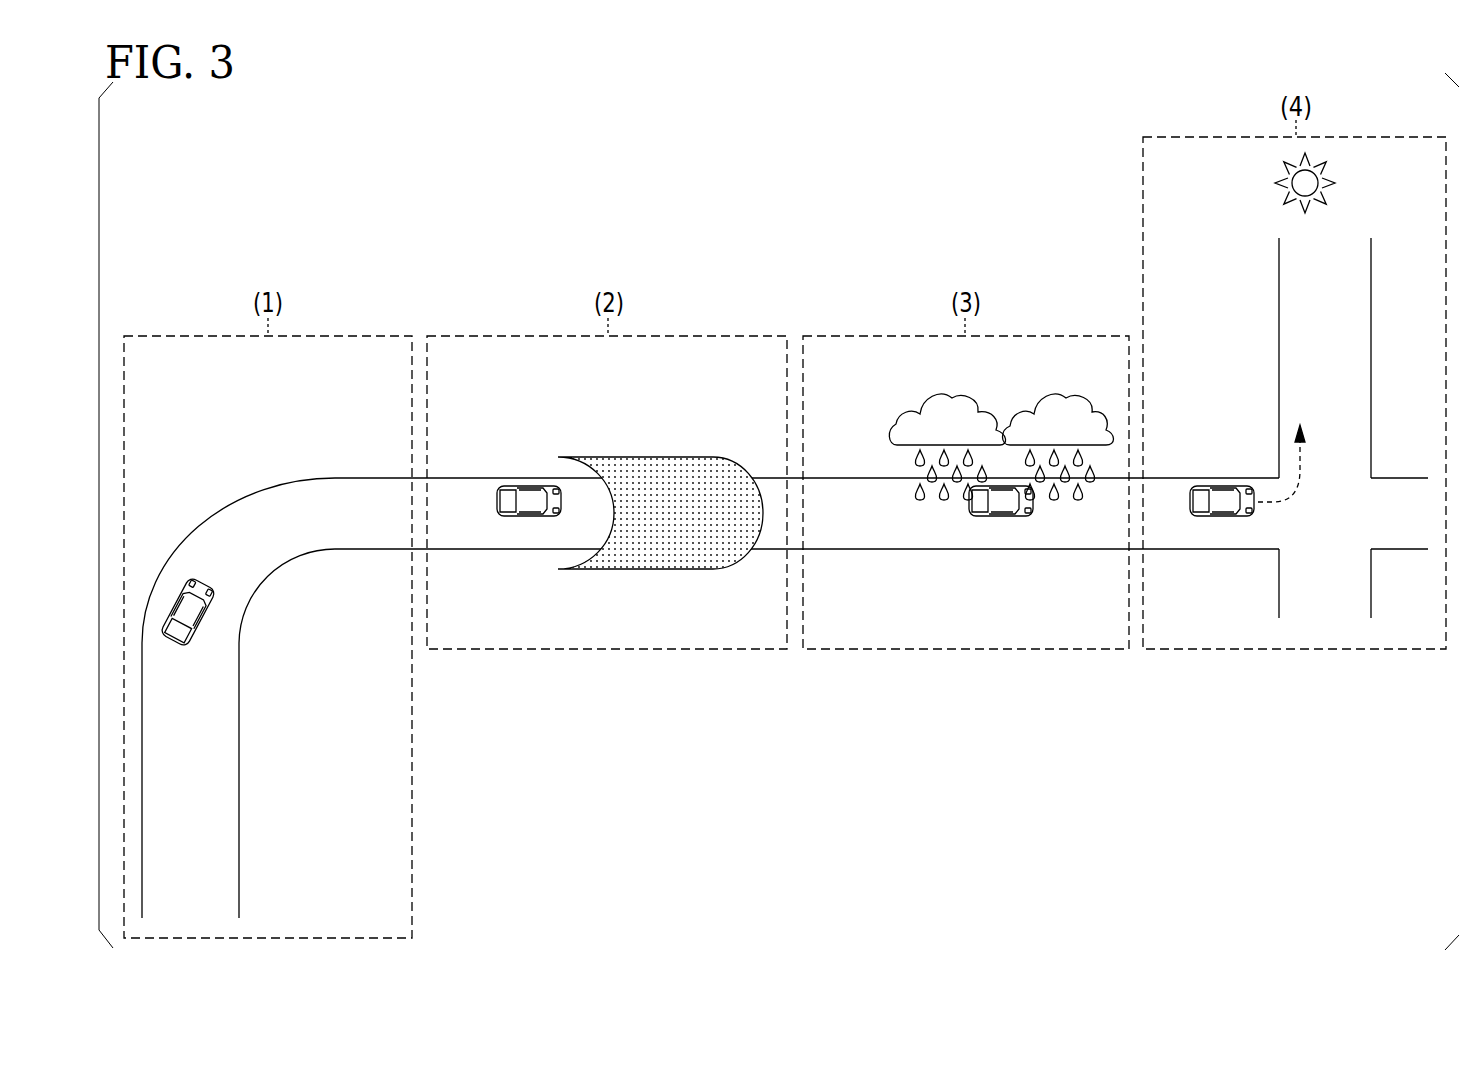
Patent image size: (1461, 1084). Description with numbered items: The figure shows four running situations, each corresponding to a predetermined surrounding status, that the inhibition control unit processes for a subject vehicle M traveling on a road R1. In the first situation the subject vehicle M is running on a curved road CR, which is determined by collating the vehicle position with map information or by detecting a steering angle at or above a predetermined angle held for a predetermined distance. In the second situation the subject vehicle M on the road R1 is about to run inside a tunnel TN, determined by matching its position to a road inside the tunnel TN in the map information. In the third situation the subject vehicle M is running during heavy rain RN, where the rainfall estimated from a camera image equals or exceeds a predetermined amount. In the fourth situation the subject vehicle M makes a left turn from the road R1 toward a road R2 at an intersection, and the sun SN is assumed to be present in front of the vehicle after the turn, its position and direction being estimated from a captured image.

The curved road CR is at (214, 486).
The tunnel TN is at (653, 451).
The heavy rain RN is at (900, 416).
The sun SN is at (1262, 181).
The subject vehicle M is at (202, 627).
The road R1 is at (211, 913).
The road R2 is at (1339, 268).